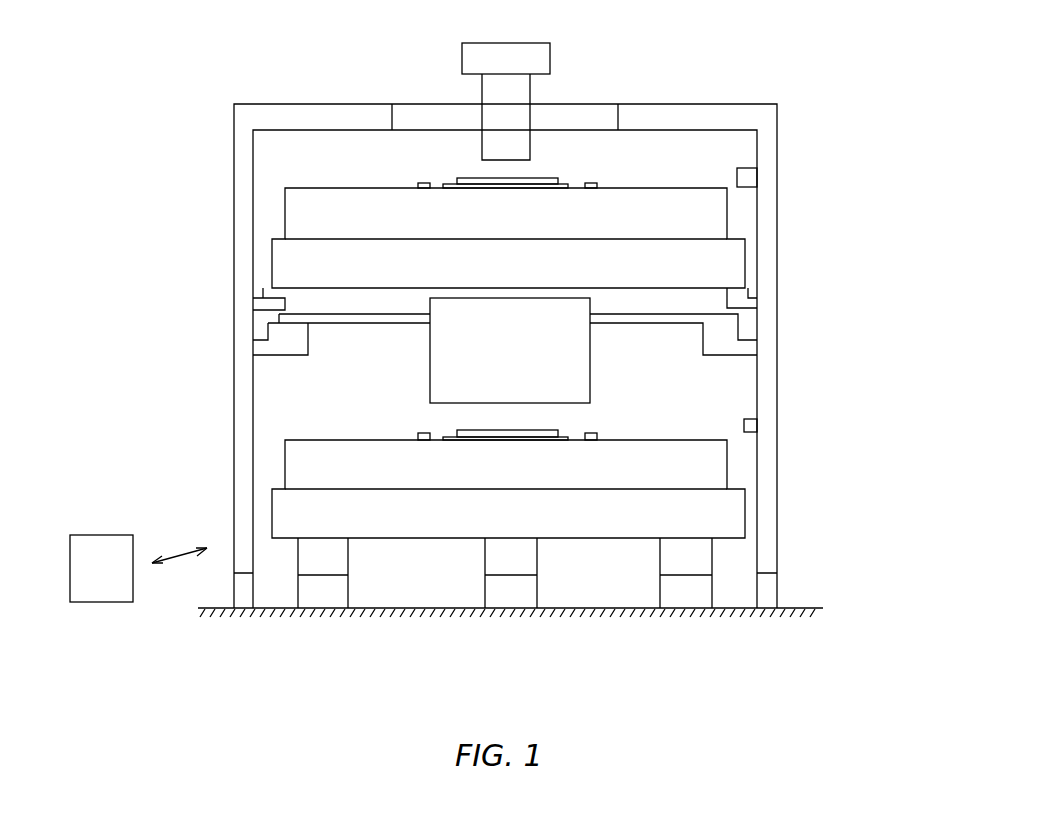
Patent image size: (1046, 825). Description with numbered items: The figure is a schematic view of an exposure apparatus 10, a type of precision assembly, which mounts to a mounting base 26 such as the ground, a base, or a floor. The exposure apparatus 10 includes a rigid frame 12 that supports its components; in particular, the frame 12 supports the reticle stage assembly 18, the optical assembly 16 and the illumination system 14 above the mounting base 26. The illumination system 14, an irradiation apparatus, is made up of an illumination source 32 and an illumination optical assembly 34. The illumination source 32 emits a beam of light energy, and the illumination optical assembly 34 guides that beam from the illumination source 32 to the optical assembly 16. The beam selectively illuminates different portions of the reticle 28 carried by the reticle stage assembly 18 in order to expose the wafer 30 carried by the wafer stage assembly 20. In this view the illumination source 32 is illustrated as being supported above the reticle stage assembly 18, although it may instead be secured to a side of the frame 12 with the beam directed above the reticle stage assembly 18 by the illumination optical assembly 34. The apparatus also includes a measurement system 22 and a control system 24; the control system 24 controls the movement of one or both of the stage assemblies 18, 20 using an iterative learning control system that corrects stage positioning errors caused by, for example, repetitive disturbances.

The exposure apparatus 10 is at (705, 80).
The frame 12 is at (778, 168).
The illumination system 14 is at (615, 68).
The optical assembly 16 is at (522, 362).
The reticle stage assembly 18 is at (680, 192).
The wafer stage assembly 20 is at (672, 460).
The measurement system 22 is at (745, 178).
The control system 24 is at (85, 602).
The mounting base 26 is at (642, 610).
The reticle 28 is at (525, 178).
The wafer 30 is at (487, 428).
The illumination source 32 is at (524, 54).
The illumination optical assembly 34 is at (510, 103).